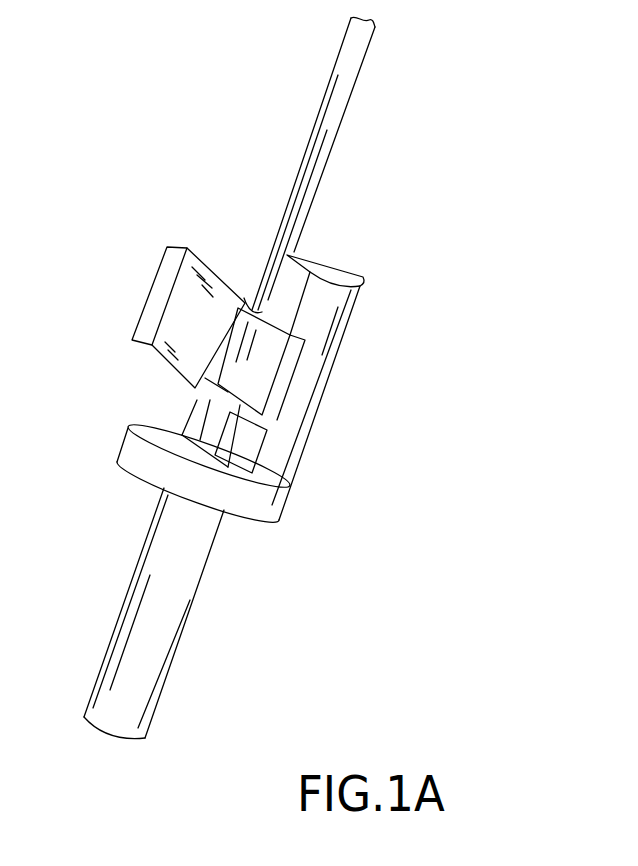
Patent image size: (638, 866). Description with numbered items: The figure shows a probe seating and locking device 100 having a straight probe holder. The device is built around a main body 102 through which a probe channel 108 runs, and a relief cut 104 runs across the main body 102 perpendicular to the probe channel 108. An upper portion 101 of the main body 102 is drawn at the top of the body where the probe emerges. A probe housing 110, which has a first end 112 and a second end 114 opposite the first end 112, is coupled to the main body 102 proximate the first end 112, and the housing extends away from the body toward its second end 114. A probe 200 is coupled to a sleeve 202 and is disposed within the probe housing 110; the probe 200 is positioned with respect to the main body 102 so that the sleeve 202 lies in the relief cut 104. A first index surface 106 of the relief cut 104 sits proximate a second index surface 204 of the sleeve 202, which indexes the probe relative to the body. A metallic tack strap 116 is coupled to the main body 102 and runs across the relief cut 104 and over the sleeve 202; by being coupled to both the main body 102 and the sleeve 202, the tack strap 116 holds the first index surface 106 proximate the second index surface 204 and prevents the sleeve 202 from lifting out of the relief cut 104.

The probe seating and locking device 100 is at (442, 61).
The probe 200 is at (308, 180).
The body top portion 101 is at (330, 267).
The main body 102 is at (300, 392).
The relief cut 104 is at (263, 403).
The first index surface 106 is at (334, 323).
The probe channel 108 is at (222, 440).
The probe housing 110 is at (170, 619).
The first end 112 is at (200, 505).
The second end 114 is at (132, 740).
The tack strap 116 is at (177, 309).
The sleeve 202 is at (220, 385).
The second index surface 204 is at (252, 312).